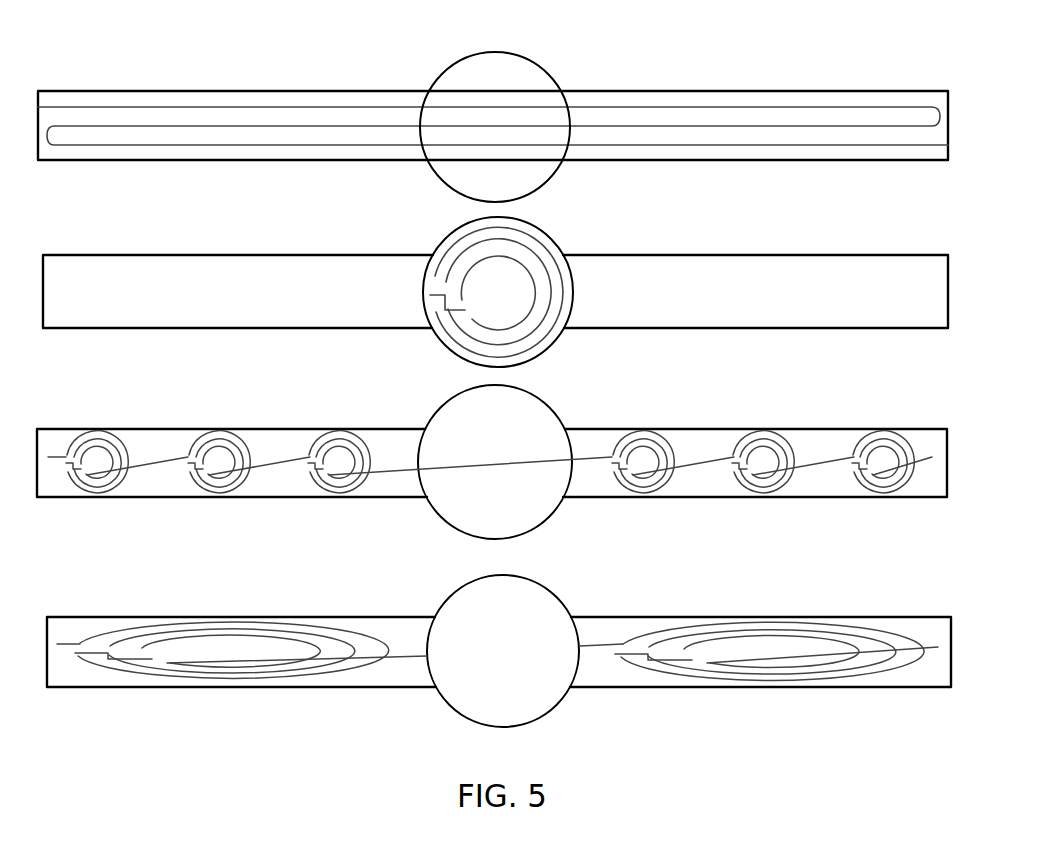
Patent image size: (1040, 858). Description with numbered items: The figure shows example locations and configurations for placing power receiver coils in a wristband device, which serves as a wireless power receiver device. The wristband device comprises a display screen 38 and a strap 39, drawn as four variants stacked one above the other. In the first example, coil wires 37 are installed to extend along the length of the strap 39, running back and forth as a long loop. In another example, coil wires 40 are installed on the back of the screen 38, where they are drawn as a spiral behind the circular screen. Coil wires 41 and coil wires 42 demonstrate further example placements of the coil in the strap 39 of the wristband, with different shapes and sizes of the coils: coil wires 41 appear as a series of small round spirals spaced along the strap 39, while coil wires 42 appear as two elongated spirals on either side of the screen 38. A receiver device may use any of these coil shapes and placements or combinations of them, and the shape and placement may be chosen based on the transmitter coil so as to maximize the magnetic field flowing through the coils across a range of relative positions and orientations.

The coil wires 37 is at (275, 127).
The display screen 38 is at (533, 173).
The strap 39 is at (845, 160).
The coil wires 40 is at (537, 333).
The coil wires 41 is at (667, 480).
The coil wires 42 is at (360, 667).